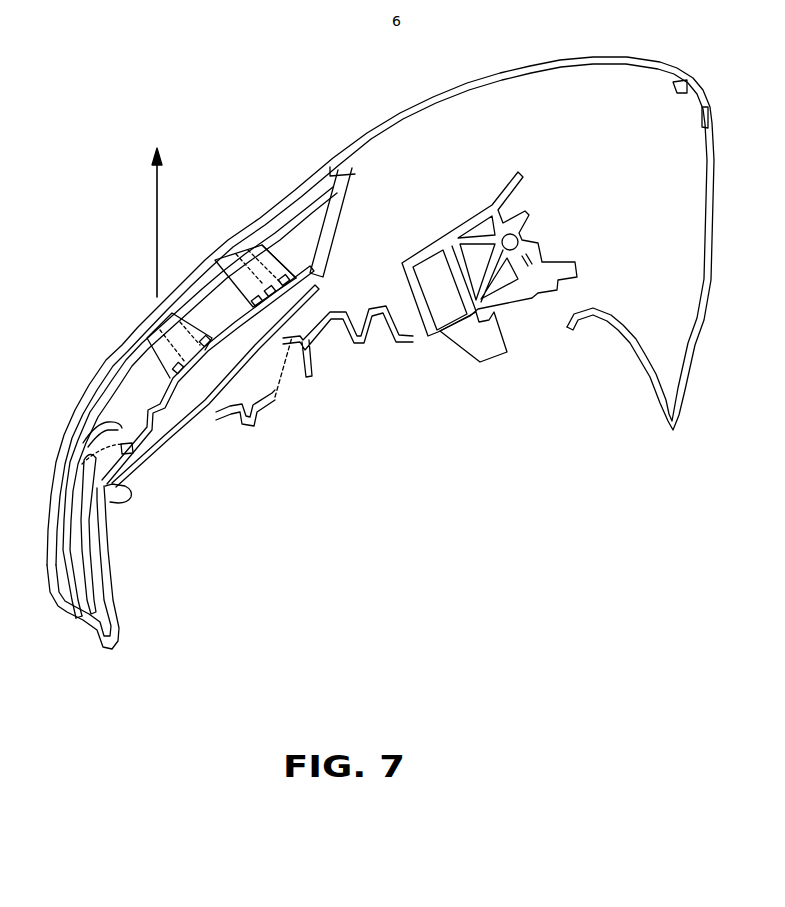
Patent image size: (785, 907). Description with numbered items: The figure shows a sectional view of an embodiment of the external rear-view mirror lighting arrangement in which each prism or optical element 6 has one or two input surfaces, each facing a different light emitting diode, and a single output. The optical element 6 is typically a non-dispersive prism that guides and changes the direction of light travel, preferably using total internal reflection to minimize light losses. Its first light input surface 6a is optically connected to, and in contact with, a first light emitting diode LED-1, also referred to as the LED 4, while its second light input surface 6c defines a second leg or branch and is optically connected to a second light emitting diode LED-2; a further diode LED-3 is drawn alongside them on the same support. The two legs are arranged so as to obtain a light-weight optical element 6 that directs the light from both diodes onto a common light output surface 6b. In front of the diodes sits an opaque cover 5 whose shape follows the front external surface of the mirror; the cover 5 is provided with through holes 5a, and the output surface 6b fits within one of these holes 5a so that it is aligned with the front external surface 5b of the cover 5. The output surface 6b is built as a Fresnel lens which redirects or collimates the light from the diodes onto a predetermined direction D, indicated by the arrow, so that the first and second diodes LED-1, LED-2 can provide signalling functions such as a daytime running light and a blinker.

The LED 4 is at (174, 373).
The opaque cover 5 is at (212, 253).
The through holes 5a is at (138, 327).
The front external surface 5b is at (115, 345).
The optical element 6 is at (250, 267).
The first light input surface 6a is at (253, 305).
The light output surface 6b is at (222, 263).
The second light input surface 6c is at (288, 270).
The first light emitting diode LED-1 is at (257, 310).
The second light emitting diode LED-2 is at (270, 293).
The third LED LED-3 is at (284, 275).
The predetermined direction D is at (145, 222).